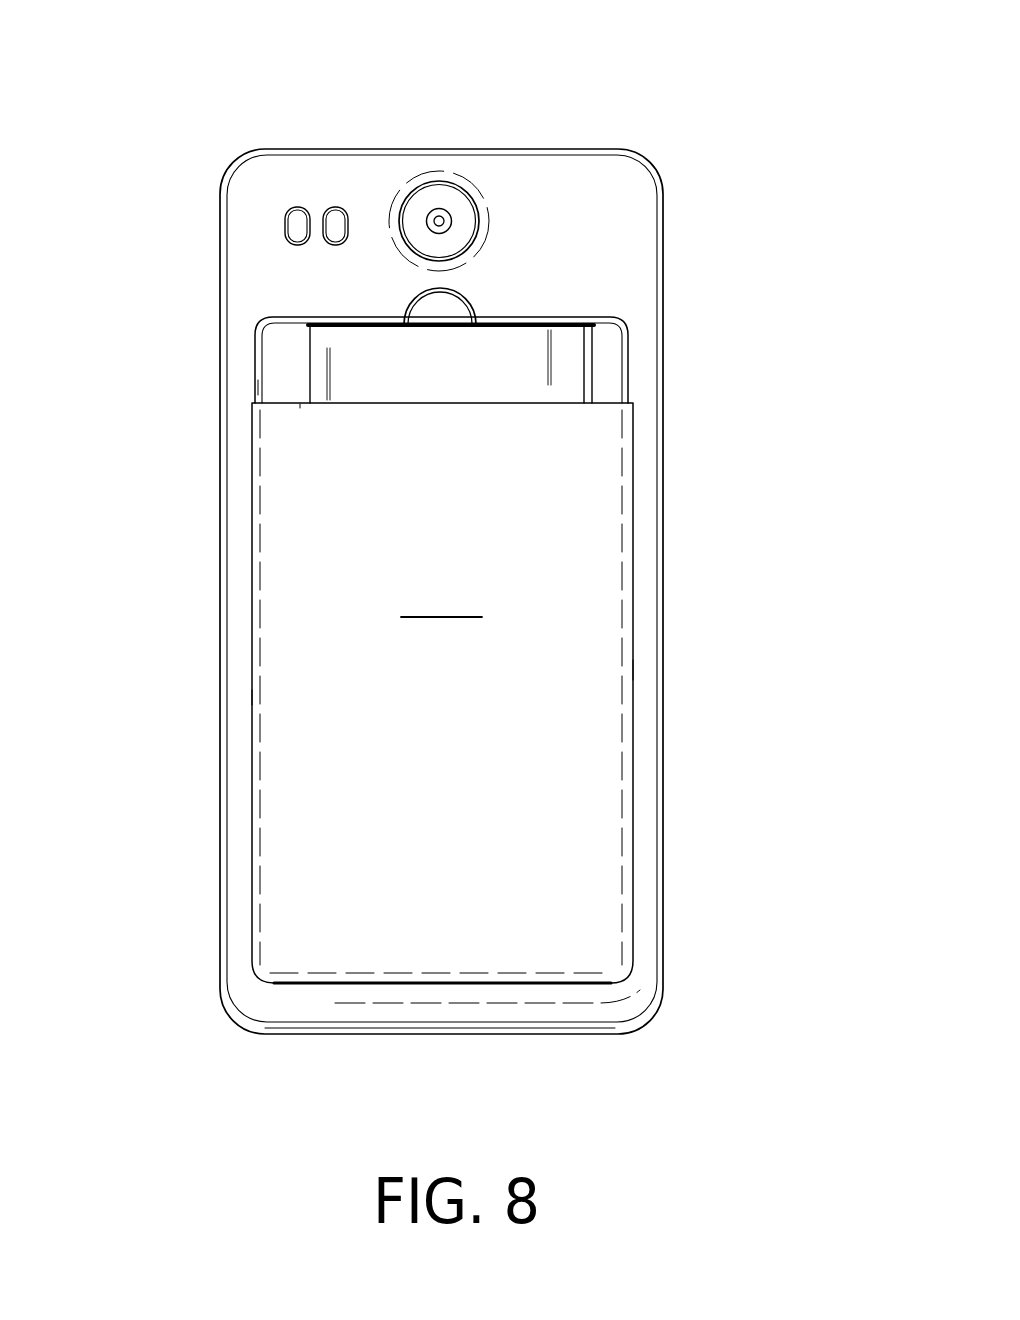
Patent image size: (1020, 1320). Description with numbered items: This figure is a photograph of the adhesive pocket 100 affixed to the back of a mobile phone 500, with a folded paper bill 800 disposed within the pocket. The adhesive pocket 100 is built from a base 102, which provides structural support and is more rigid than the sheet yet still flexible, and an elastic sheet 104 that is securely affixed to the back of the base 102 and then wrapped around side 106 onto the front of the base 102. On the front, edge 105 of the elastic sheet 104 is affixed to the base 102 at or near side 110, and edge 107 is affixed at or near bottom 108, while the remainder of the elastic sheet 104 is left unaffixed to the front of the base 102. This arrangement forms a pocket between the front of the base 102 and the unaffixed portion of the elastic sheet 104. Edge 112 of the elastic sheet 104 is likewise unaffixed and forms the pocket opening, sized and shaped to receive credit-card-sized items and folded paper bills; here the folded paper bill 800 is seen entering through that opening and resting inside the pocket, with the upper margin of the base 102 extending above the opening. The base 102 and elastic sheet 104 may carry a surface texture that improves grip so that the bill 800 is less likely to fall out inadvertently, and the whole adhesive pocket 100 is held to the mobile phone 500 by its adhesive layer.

The mobile phone 500 is at (530, 180).
The folded paper bill 800 is at (390, 347).
The base 102 is at (604, 378).
The elastic sheet 104 is at (531, 498).
The adhesive pocket 100 is at (441, 593).
The edge 112 is at (300, 410).
The side 110 is at (257, 387).
The edge 105 is at (257, 697).
The side 106 is at (628, 669).
The edge 107 is at (305, 975).
The bottom 108 is at (470, 982).